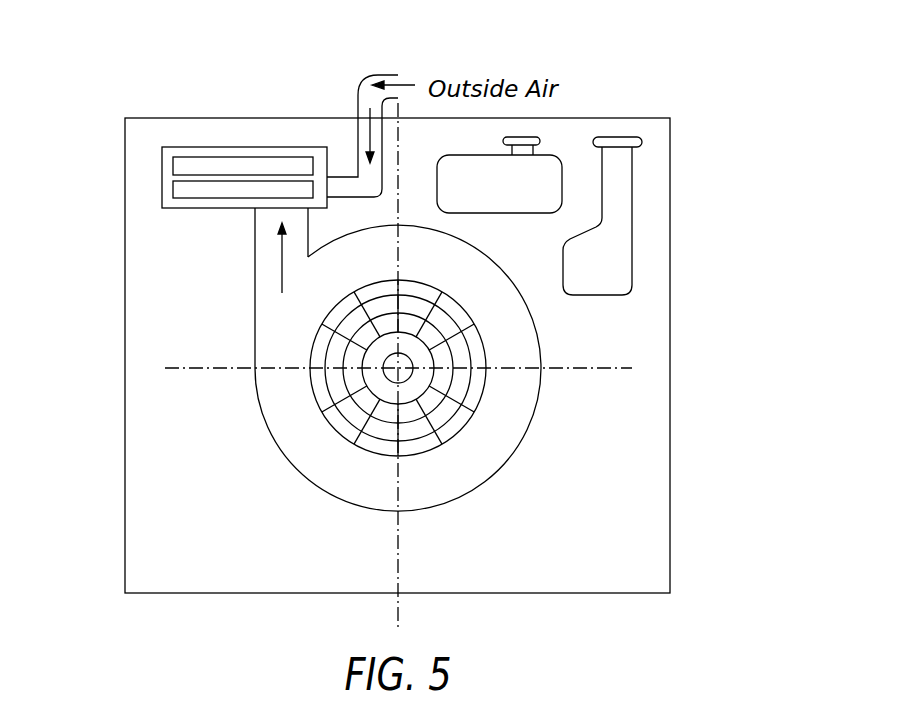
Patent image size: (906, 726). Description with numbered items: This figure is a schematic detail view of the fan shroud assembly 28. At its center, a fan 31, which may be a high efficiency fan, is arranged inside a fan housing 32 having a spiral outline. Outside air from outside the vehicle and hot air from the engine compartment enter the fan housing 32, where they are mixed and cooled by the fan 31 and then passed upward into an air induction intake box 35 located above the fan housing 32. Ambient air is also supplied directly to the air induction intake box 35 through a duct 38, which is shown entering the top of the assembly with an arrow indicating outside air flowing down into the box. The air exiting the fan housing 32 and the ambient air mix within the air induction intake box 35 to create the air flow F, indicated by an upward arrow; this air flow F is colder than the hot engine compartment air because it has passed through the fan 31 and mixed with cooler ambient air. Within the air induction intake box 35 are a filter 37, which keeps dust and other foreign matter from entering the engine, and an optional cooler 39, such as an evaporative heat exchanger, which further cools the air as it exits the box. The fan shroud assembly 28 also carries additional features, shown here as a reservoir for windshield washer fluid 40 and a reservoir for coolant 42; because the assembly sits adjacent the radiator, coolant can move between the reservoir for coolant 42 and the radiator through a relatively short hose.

The fan shroud assembly 28 is at (657, 198).
The fan 31 is at (370, 415).
The fan housing 32 is at (512, 455).
The air induction intake box 35 is at (162, 167).
The filter 37 is at (212, 157).
The duct 38 is at (359, 197).
The cooler 39 is at (203, 198).
The reservoir for windshield washer fluid 40 is at (632, 265).
The reservoir for coolant 42 is at (512, 213).
The air flow F is at (282, 263).